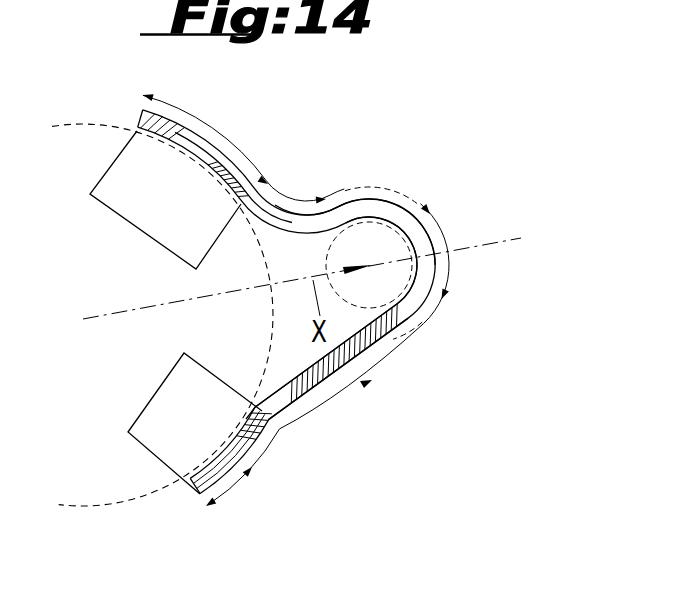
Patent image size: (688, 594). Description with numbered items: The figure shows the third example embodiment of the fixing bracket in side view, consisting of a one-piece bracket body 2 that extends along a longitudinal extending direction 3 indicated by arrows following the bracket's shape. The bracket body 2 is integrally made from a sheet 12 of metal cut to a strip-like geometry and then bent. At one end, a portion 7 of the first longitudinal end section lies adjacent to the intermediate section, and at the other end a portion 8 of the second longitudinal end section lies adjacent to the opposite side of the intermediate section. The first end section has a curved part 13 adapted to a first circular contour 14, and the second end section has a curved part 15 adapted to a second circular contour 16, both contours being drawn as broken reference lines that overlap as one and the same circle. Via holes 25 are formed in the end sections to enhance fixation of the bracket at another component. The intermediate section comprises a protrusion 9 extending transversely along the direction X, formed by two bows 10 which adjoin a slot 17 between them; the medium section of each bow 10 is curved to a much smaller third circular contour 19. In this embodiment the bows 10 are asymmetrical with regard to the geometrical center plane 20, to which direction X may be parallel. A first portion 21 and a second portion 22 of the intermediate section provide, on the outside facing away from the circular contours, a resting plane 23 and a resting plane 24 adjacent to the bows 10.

The bracket body 2 is at (374, 207).
The longitudinal extending direction 3 is at (213, 130).
The portion 7 is at (230, 167).
The portion 8 is at (282, 408).
The protrusion 9 is at (397, 213).
The bows 10 is at (381, 241).
The sheet of metal 12 is at (364, 360).
The part 13 is at (147, 243).
The first circular contour 14 is at (95, 124).
The part 15 is at (148, 392).
The second circular contour 16 is at (113, 506).
The slot 17 is at (407, 284).
The third circular contour 19 is at (386, 325).
The geometrical center plane 20 is at (508, 245).
The first portion 21 is at (322, 182).
The second portion 22 is at (273, 397).
The resting plane 23 is at (288, 212).
The resting plane 24 is at (312, 408).
The via holes 25 is at (177, 167).